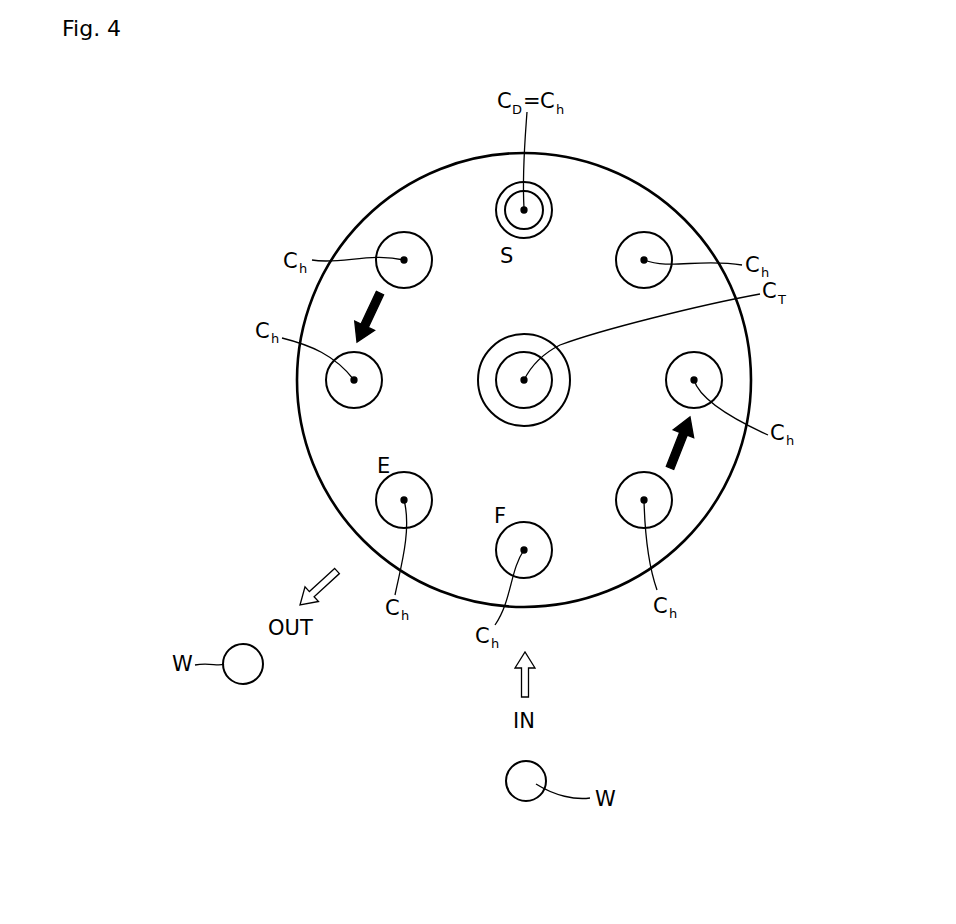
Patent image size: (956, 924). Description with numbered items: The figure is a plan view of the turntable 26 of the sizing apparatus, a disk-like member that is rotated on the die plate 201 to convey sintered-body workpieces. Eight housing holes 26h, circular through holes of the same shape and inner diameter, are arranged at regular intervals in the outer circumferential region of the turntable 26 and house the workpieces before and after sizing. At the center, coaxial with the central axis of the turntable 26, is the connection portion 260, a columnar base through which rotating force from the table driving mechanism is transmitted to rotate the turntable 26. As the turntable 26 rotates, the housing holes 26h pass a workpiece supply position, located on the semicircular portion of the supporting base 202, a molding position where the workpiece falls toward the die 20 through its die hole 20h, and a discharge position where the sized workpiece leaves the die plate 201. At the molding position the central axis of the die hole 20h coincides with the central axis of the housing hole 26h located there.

The turntable 26 is at (300, 428).
The housing holes 26h is at (552, 222).
The connection portion 260 is at (545, 373).
The supporting base 202 is at (541, 171).
The die plate 201 is at (524, 210).
The die hole 20h is at (460, 175).
The die 20 is at (511, 211).